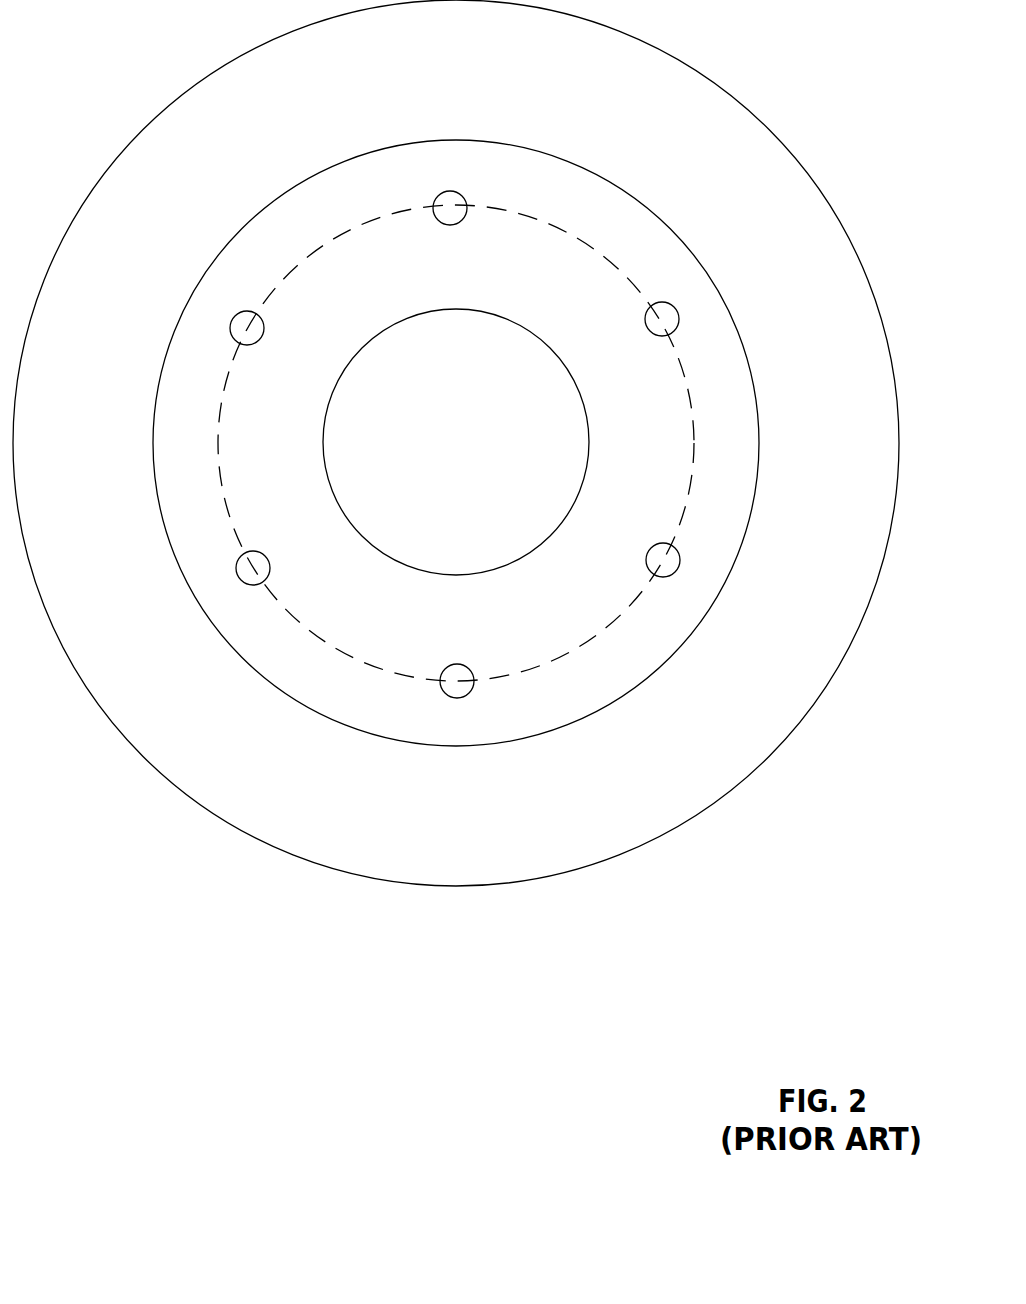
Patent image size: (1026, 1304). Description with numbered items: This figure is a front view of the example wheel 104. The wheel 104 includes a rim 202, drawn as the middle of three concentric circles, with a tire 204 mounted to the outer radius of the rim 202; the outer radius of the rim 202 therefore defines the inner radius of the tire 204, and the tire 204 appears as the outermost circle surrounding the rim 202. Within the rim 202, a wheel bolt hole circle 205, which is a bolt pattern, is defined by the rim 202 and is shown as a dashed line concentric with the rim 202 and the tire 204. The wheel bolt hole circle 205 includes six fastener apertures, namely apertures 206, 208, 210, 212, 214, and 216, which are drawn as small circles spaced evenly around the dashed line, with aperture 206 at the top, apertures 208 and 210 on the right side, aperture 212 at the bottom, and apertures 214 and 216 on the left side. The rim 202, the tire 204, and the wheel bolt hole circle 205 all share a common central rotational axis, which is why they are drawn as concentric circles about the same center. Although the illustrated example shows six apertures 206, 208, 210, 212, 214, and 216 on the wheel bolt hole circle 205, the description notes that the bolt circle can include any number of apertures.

The wheel 104 is at (213, 59).
The rim 202 is at (637, 197).
The tire 204 is at (820, 184).
The wheel bolt hole circle 205 is at (318, 245).
The aperture 206 is at (462, 222).
The aperture 208 is at (660, 336).
The aperture 210 is at (645, 556).
The aperture 212 is at (458, 663).
The aperture 214 is at (247, 553).
The aperture 216 is at (245, 345).